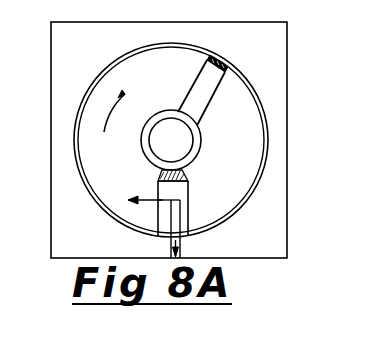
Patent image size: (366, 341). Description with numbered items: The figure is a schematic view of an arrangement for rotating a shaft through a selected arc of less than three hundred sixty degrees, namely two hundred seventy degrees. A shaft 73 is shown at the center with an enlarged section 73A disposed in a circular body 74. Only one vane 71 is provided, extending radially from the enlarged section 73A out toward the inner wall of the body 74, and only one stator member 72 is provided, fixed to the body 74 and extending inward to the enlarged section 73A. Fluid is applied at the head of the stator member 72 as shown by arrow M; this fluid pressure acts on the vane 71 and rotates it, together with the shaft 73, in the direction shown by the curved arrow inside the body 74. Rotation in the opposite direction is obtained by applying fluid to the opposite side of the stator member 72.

The radial arm with friction shoe 71 is at (203, 98).
The slide stem 72 is at (152, 197).
The hub 73 is at (166, 138).
The hub sleeve 73A is at (200, 140).
The rotary disc 74 is at (95, 85).
The drive direction arrow M is at (182, 258).